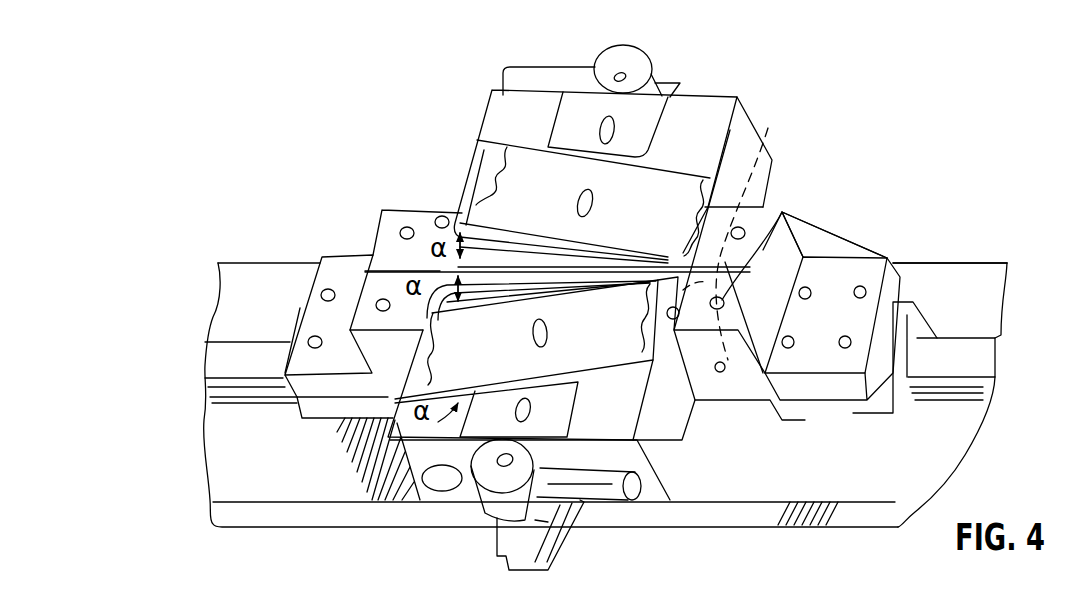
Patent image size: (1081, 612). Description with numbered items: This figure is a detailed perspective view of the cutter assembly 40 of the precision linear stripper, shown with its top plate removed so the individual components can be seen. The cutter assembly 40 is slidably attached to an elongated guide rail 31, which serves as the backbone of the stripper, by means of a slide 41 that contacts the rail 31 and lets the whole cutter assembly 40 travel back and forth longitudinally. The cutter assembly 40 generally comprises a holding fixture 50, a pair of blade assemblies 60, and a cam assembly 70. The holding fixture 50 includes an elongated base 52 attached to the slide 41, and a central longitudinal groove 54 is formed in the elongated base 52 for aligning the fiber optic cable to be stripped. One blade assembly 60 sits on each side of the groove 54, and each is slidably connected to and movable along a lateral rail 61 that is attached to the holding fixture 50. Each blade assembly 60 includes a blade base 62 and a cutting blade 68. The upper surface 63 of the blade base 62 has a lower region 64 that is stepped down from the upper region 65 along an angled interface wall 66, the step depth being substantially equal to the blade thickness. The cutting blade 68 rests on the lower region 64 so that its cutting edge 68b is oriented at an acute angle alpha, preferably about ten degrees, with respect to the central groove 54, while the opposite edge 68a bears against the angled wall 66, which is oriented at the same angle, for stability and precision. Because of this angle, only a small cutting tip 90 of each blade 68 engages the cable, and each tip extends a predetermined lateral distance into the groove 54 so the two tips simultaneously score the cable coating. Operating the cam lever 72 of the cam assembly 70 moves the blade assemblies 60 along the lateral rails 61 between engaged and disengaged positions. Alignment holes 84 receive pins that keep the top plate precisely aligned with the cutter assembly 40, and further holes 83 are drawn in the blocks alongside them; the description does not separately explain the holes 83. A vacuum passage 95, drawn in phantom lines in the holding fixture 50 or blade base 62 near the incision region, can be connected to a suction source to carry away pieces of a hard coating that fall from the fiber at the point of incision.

The cutter assembly 40 is at (312, 150).
The slide 41 is at (918, 317).
The guide rail 31 is at (972, 357).
The holding fixture 50 is at (802, 236).
The elongated base 52 is at (862, 268).
The central longitudinal groove 54 is at (790, 300).
The vacuum passage 95 is at (758, 200).
The screw holes 83 is at (380, 300).
The alignment holes 84 is at (438, 215).
The blade assembly 60 is at (766, 129).
The upper surface 63 is at (693, 117).
The upper region 65 is at (502, 115).
The cam lever 72 is at (543, 78).
The cam assembly 70 is at (668, 60).
The angled interface wall 66 is at (480, 140).
The lower region 64 is at (482, 178).
The edge of the cutting blade 68a is at (650, 175).
The cutting edge 68b is at (642, 246).
The cutting blade 68 is at (585, 348).
The cutting tip 90 is at (655, 284).
The blade base 62 is at (622, 428).
The lateral rail 61 is at (562, 546).